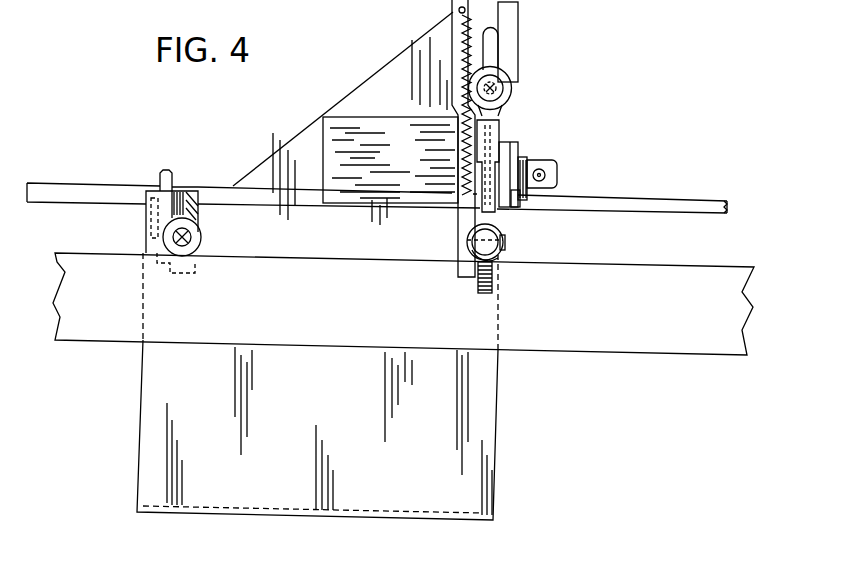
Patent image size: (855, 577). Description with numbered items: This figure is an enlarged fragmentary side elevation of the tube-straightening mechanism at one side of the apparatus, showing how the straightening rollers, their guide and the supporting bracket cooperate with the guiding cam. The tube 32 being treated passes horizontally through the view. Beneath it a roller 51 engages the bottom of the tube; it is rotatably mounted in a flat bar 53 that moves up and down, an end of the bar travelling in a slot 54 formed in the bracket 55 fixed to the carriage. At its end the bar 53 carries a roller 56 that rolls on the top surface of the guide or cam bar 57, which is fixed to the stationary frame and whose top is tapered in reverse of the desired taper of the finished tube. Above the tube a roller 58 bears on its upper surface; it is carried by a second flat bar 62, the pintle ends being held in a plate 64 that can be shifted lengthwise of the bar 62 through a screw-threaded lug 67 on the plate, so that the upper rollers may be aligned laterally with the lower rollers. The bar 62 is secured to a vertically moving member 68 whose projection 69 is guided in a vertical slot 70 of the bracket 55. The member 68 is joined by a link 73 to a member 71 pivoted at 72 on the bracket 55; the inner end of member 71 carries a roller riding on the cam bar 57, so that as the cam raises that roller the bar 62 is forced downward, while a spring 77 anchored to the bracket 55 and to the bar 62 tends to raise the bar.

The tube 32 is at (58, 183).
The roller 51 is at (161, 171).
The flat bar 53 is at (186, 195).
The slot 54 is at (200, 210).
The bracket 55 is at (147, 400).
The roller 56 is at (200, 250).
The guide or cam bar 57 is at (403, 304).
The roller 58 is at (500, 140).
The flat bar 62 is at (508, 163).
The plate 64 is at (518, 194).
The lug 67 is at (557, 175).
The vertically moving member 68 is at (513, 89).
The projection 69 is at (512, 84).
The vertical slot 70 is at (492, 52).
The member 71 is at (498, 258).
The pivot 72 is at (506, 240).
The link 73 is at (479, 290).
The spring 77 is at (458, 33).